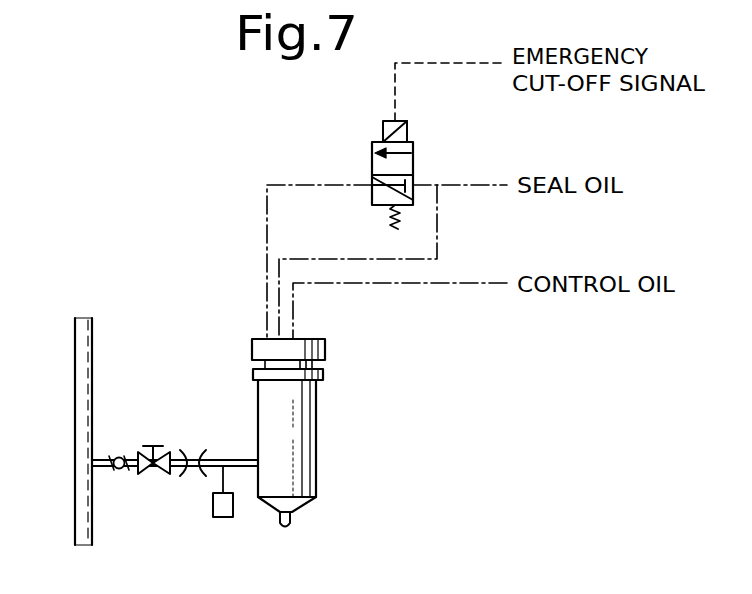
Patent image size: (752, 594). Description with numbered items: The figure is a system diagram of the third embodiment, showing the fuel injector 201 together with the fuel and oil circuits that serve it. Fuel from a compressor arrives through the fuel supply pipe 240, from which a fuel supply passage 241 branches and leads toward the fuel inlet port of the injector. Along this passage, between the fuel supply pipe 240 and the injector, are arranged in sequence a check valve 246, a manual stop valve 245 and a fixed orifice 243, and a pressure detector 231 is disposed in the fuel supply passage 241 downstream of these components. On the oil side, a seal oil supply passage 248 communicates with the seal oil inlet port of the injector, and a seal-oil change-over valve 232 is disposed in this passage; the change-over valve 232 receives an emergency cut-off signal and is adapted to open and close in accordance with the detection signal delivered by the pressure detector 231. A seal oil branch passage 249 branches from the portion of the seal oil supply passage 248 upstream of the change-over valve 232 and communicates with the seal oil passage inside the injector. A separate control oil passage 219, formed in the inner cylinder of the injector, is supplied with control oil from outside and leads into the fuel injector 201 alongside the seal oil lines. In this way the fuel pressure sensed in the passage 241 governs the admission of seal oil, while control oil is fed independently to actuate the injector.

The fuel injector 201 is at (317, 408).
The control oil passage 219 is at (418, 285).
The pressure detector 231 is at (222, 518).
The seal-oil change-over valve 232 is at (413, 142).
The fuel supply pipe 240 is at (75, 356).
The fuel supply passage 241 is at (172, 469).
The fixed orifice 243 is at (200, 450).
The manual stop valve 245 is at (154, 445).
The check valve 246 is at (117, 453).
The seal oil supply passage 248 is at (300, 183).
The seal oil branch passage 249 is at (438, 243).